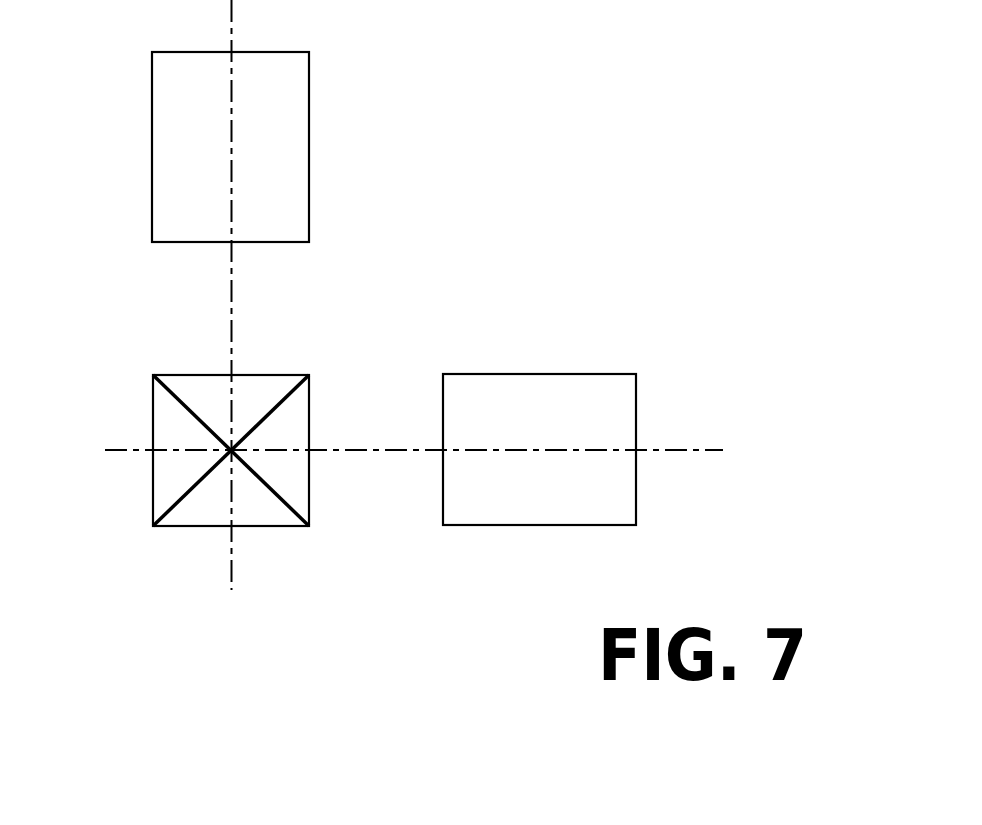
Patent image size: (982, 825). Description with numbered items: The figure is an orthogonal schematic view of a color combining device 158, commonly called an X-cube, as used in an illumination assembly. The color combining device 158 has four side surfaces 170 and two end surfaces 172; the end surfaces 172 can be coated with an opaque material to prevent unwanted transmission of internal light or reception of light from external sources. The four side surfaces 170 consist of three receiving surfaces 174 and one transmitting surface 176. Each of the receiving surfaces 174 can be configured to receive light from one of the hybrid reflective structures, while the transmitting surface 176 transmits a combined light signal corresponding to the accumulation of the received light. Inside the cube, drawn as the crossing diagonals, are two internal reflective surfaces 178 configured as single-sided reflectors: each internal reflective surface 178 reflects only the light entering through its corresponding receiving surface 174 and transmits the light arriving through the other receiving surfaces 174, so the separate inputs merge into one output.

The color combining device 158 is at (122, 334).
The side surfaces 170 is at (382, 152).
The end surfaces 172 is at (262, 507).
The receiving surfaces 174 is at (262, 374).
The transmitting surface 176 is at (310, 418).
The internal reflective surfaces 178 is at (180, 392).